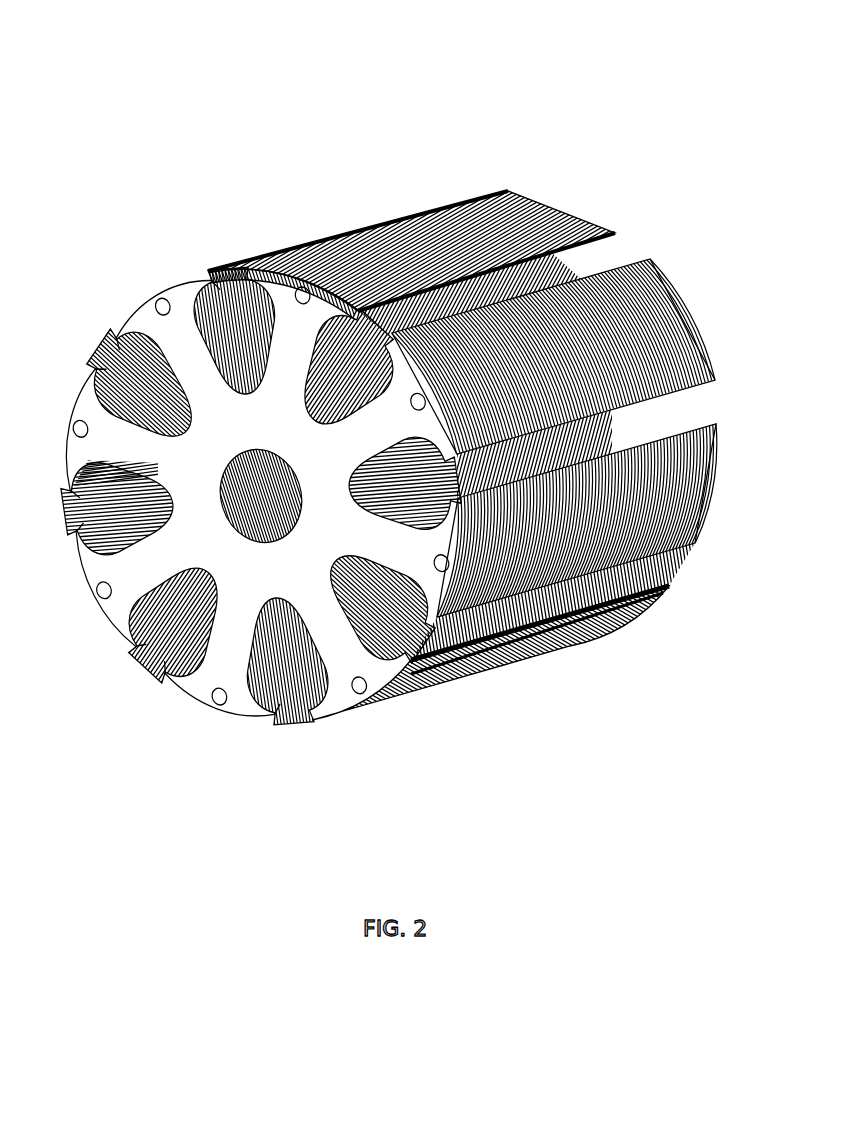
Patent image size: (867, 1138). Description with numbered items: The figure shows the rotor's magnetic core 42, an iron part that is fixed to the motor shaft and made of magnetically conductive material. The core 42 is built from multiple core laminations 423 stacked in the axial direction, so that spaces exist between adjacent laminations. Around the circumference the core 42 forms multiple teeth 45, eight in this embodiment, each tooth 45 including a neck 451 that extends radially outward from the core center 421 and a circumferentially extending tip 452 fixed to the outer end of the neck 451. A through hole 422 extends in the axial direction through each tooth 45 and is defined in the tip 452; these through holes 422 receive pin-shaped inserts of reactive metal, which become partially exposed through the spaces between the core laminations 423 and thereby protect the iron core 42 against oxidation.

The magnetic core 42 is at (399, 100).
The core center 421 is at (64, 434).
The through hole 422 is at (410, 392).
The core lamination 423 is at (668, 318).
The tooth 45 is at (174, 322).
The neck 451 is at (188, 362).
The tip 452 is at (273, 275).